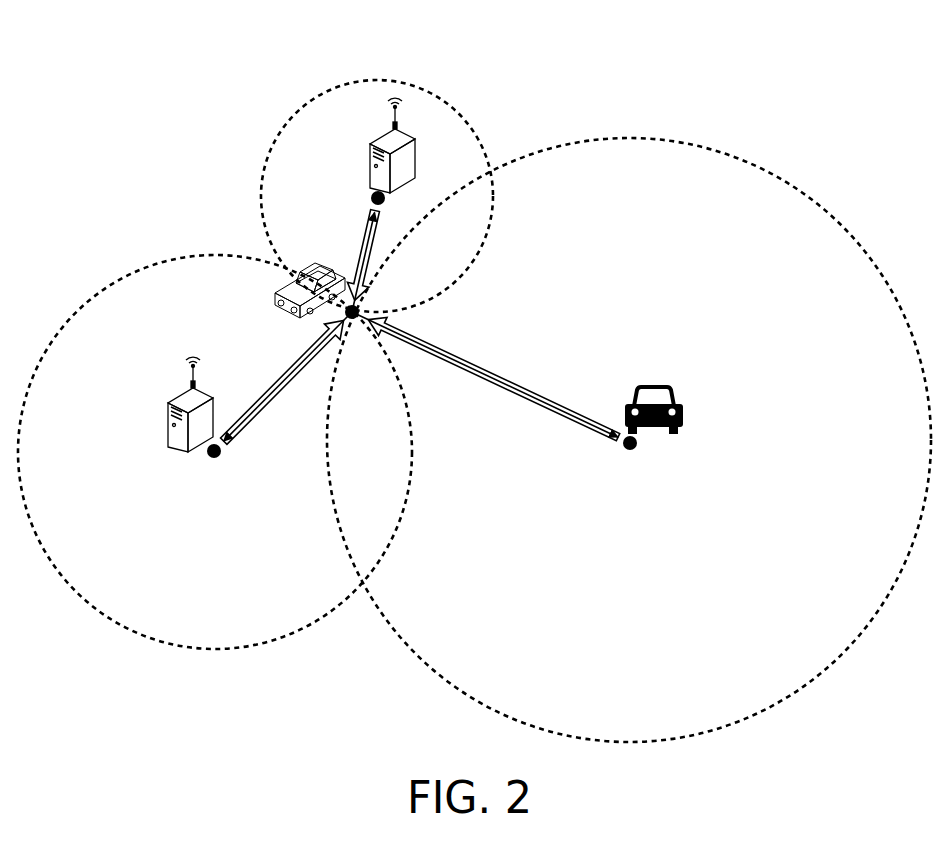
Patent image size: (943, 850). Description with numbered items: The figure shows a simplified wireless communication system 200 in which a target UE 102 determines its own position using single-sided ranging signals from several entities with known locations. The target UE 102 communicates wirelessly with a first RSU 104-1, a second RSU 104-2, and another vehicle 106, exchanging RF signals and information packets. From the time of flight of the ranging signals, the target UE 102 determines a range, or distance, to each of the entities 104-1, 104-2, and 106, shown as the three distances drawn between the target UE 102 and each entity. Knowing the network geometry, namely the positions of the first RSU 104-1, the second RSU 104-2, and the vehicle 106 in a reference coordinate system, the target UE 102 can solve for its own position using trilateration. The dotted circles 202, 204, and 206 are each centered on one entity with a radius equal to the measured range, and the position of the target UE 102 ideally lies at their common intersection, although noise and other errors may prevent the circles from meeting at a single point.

The wireless communication system 200 is at (698, 38).
The circle 202 is at (160, 262).
The circle 204 is at (400, 83).
The circle 206 is at (763, 167).
The target UE 102 is at (352, 318).
The first RSU 104-1 is at (217, 457).
The second RSU 104-2 is at (422, 151).
The vehicle 106 is at (627, 448).